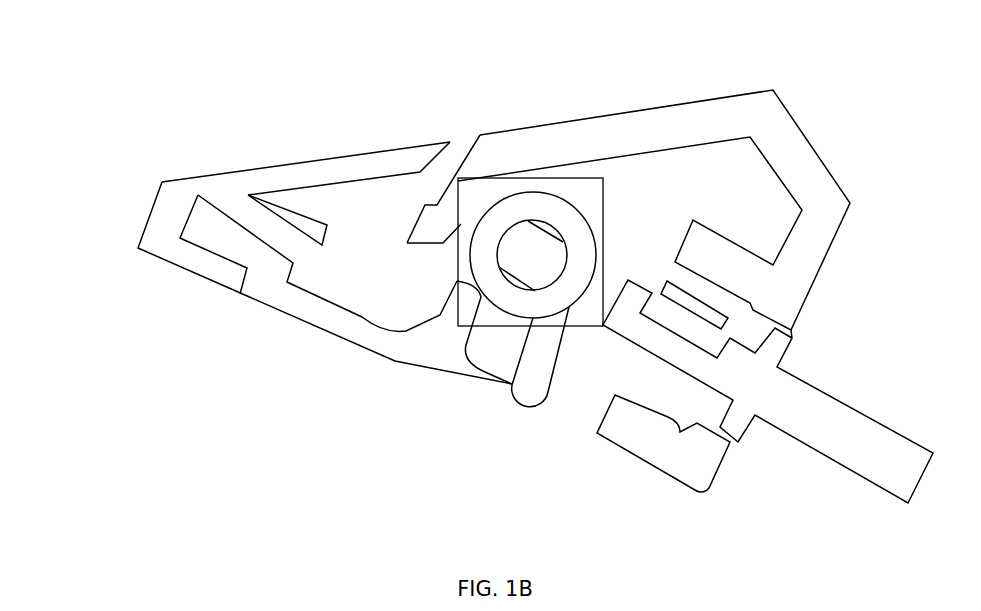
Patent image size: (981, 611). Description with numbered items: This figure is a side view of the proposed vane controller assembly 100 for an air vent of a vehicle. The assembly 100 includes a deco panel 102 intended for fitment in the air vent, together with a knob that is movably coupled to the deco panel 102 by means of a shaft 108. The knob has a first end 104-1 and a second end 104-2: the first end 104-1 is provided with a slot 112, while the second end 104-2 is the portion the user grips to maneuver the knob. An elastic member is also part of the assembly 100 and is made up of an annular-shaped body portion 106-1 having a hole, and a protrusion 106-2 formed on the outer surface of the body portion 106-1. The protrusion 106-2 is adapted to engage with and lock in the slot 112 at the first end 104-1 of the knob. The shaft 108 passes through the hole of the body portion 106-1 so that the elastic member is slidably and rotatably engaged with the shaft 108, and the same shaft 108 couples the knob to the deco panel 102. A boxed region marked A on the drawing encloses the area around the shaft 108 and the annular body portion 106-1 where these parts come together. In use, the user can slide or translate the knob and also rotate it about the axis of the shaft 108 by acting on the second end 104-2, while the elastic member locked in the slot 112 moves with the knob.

The vane controller assembly 100 is at (206, 54).
The deco panel 102 is at (750, 265).
The first end 104-1 is at (482, 383).
The second end 104-2 is at (154, 234).
The annular-shaped body portion 106-1 is at (559, 204).
The protrusion 106-2 is at (496, 354).
The shaft 108 is at (521, 253).
The slot 112 is at (458, 363).
The detail region A is at (604, 177).